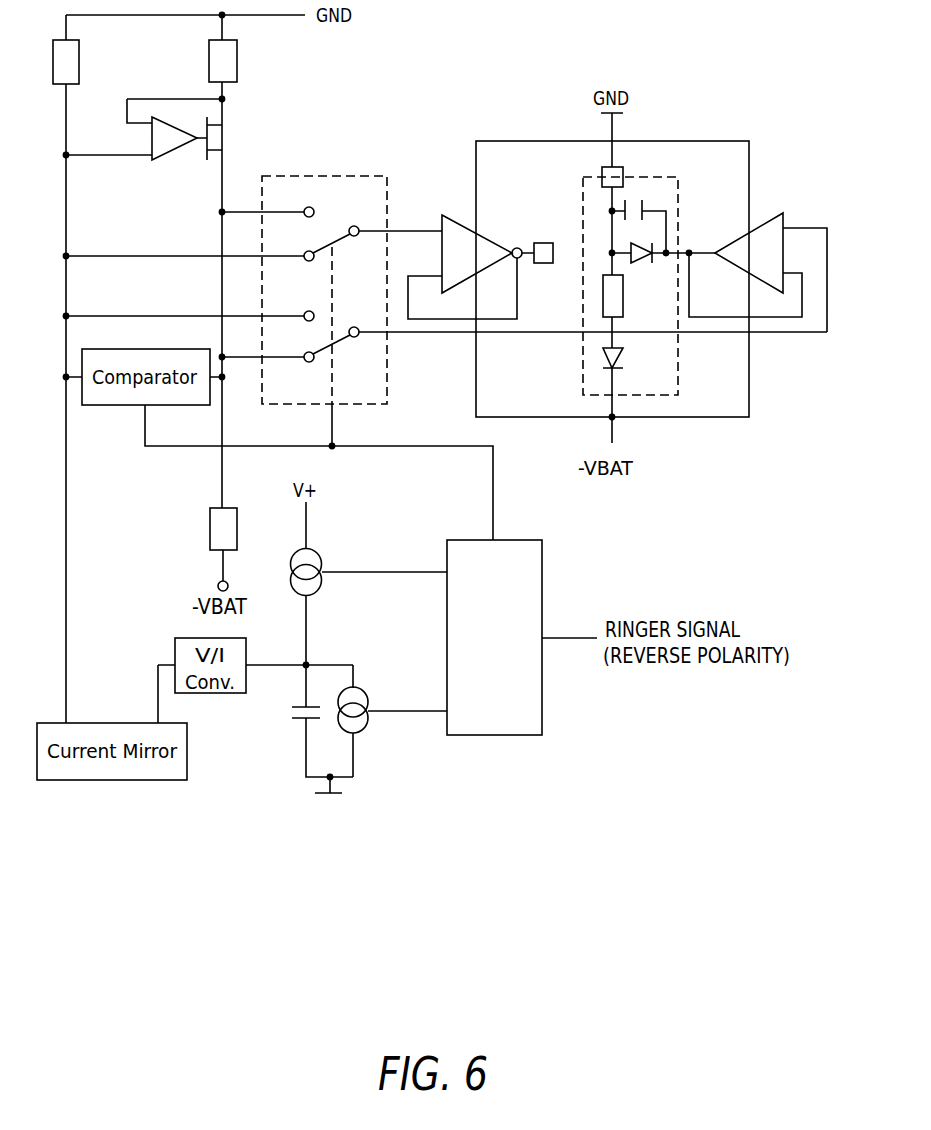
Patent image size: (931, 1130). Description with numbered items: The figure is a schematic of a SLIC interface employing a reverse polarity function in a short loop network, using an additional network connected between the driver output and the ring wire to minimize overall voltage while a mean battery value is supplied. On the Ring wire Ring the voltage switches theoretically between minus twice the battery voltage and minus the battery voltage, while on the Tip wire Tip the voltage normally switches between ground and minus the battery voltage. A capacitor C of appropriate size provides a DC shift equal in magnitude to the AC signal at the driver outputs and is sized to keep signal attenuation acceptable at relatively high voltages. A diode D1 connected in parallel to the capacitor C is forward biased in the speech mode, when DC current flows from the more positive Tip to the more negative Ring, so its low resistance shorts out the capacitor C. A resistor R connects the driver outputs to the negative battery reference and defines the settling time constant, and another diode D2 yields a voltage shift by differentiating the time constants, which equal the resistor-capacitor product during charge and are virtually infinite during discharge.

The Tip wire Tip is at (537, 237).
The Ring wire Ring is at (632, 167).
The capacitor C is at (652, 229).
The diode D1 is at (663, 265).
The resistor R is at (620, 296).
The diode D2 is at (626, 361).